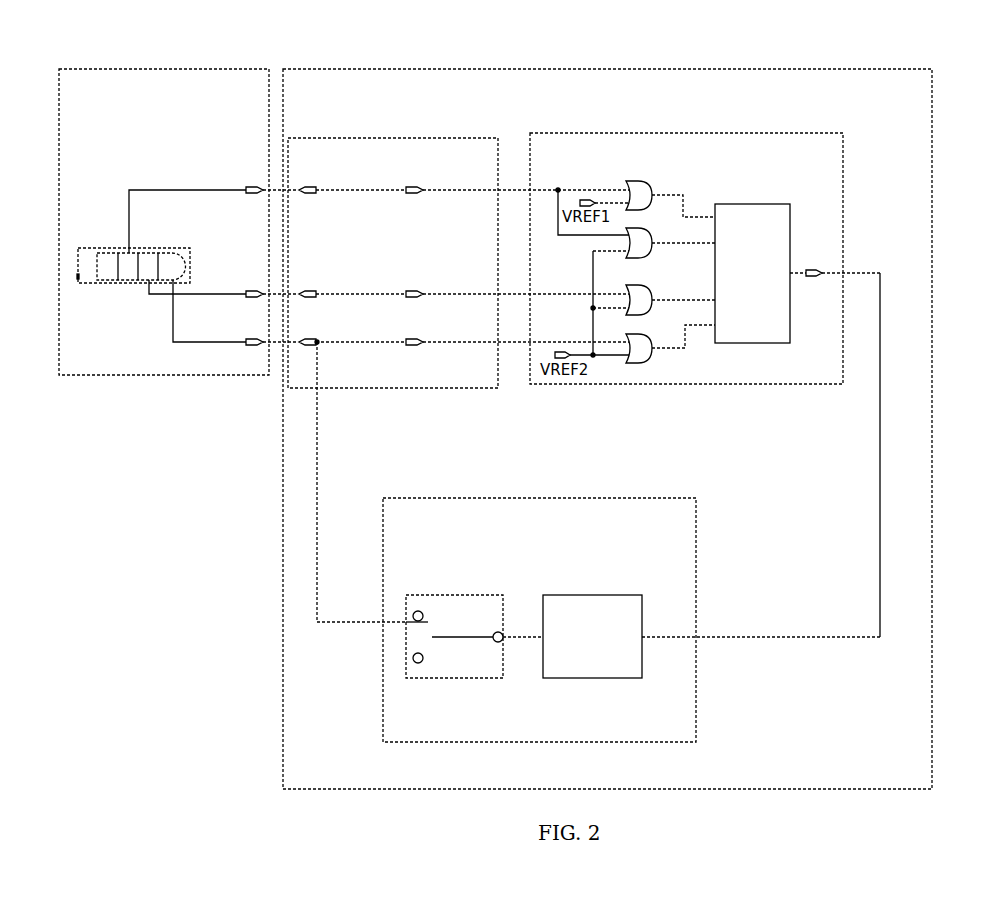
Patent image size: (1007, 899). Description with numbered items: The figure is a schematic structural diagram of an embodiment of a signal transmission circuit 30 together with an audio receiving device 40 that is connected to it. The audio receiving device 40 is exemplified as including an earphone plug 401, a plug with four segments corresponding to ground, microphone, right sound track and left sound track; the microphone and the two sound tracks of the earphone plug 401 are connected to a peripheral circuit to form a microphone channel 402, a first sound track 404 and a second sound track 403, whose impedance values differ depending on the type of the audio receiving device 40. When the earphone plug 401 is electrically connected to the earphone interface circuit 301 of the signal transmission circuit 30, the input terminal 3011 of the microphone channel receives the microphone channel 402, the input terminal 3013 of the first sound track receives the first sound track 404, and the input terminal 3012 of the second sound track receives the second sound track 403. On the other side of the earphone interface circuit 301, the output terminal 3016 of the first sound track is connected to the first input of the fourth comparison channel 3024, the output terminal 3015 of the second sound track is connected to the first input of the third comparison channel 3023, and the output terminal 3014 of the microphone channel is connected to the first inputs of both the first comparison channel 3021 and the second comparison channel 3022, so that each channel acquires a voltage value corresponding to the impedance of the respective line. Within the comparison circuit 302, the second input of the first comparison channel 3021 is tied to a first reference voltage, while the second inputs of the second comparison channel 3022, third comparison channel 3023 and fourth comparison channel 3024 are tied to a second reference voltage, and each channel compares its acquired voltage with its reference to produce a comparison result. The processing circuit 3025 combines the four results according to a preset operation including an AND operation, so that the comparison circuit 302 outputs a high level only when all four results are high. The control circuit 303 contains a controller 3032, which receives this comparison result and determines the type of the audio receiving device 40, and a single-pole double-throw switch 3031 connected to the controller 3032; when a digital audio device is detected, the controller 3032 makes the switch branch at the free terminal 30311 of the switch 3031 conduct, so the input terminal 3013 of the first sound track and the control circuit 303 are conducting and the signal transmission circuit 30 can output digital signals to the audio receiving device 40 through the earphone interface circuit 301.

The signal transmission circuit 30 is at (913, 68).
The audio receiving device 40 is at (227, 69).
The earphone plug 401 is at (152, 248).
The microphone channel 402 is at (183, 190).
The second sound track 403 is at (205, 294).
The first sound track 404 is at (205, 342).
The earphone interface circuit 301 is at (410, 138).
The input terminal of a microphone channel 3011 is at (303, 190).
The input terminal of a second sound track 3012 is at (303, 294).
The input terminal of a first sound track 3013 is at (303, 342).
The output terminal of the microphone channel 3014 is at (413, 190).
The output terminal of the second sound track 3015 is at (413, 294).
The output terminal of the first sound track 3016 is at (413, 342).
The comparison circuit 302 is at (687, 133).
The first comparison channel 3021 is at (637, 181).
The second comparison channel 3022 is at (643, 228).
The third comparison channel 3023 is at (638, 285).
The fourth comparison channel 3024 is at (635, 363).
The processing circuit 3025 is at (747, 204).
The control circuit 303 is at (540, 498).
The single-pole double-throw (SPDT) switch 3031 is at (455, 595).
The free terminal 30311 is at (428, 618).
The controller 3032 is at (593, 595).